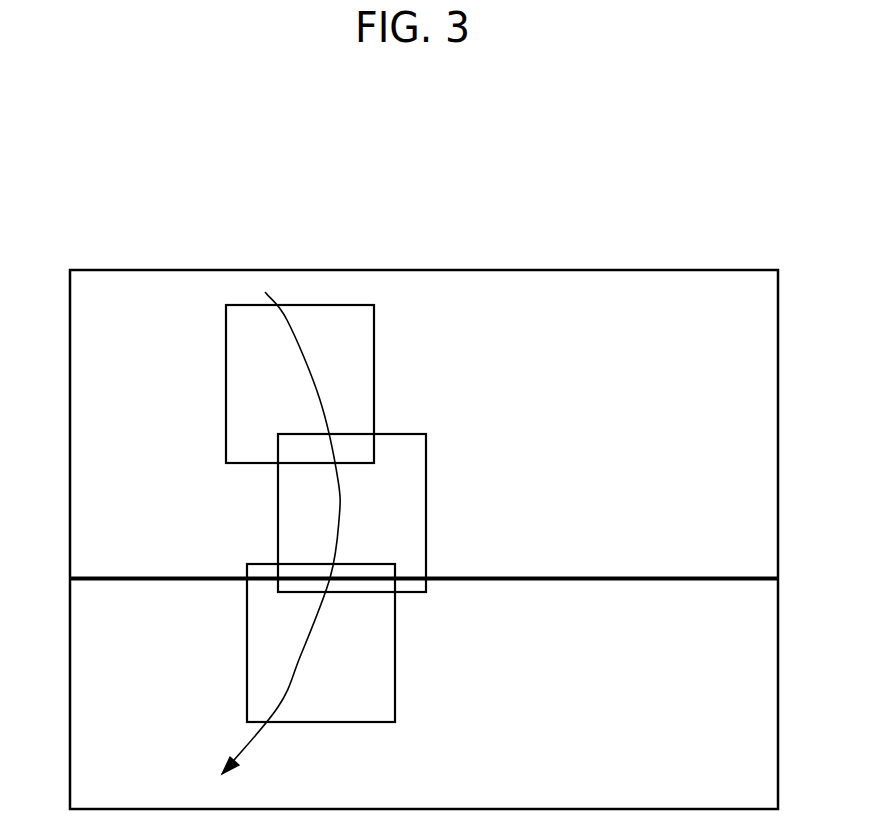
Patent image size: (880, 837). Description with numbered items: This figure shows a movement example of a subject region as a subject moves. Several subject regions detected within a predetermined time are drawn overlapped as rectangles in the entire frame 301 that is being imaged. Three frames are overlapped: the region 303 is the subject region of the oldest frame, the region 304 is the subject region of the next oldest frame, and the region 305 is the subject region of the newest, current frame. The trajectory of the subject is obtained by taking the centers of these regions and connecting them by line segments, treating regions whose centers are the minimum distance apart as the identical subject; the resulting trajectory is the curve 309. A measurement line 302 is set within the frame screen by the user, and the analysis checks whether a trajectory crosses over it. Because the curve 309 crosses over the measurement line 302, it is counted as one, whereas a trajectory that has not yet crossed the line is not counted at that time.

The entire frame 301 is at (707, 270).
The measurement line 302 is at (697, 577).
The region 303 is at (375, 348).
The region 304 is at (427, 477).
The region 305 is at (260, 563).
The curve 309 is at (285, 318).